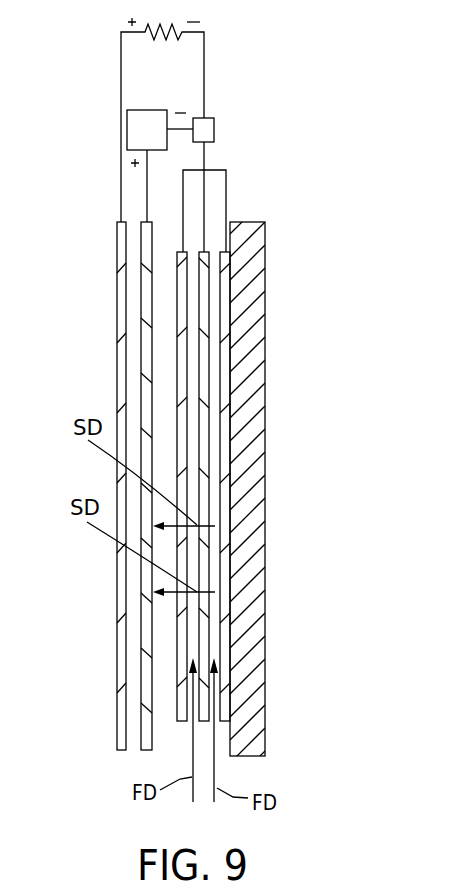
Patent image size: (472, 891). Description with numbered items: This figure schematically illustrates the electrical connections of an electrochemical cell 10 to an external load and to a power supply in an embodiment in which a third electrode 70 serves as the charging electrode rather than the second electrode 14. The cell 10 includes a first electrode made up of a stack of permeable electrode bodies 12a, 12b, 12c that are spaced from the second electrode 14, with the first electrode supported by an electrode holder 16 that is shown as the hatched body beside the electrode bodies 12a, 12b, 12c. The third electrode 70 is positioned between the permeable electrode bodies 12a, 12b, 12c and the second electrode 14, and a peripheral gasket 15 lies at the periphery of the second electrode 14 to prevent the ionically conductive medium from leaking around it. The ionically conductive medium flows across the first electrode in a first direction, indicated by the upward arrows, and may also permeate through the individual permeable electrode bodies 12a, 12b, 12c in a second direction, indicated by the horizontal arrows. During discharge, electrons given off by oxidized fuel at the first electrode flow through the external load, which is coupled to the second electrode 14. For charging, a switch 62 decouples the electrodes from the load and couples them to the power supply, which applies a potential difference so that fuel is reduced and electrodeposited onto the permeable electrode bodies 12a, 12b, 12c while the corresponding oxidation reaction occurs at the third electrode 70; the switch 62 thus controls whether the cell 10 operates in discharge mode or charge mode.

The cell 10 is at (88, 66).
The switch 62 is at (215, 130).
The second electrode 14 is at (120, 273).
The third electrode 70 is at (145, 305).
The peripheral gasket 15 is at (163, 353).
The permeable electrode body 12a is at (227, 298).
The permeable electrode body 12b is at (203, 387).
The permeable electrode body 12c is at (183, 460).
The electrode holder 16 is at (250, 347).